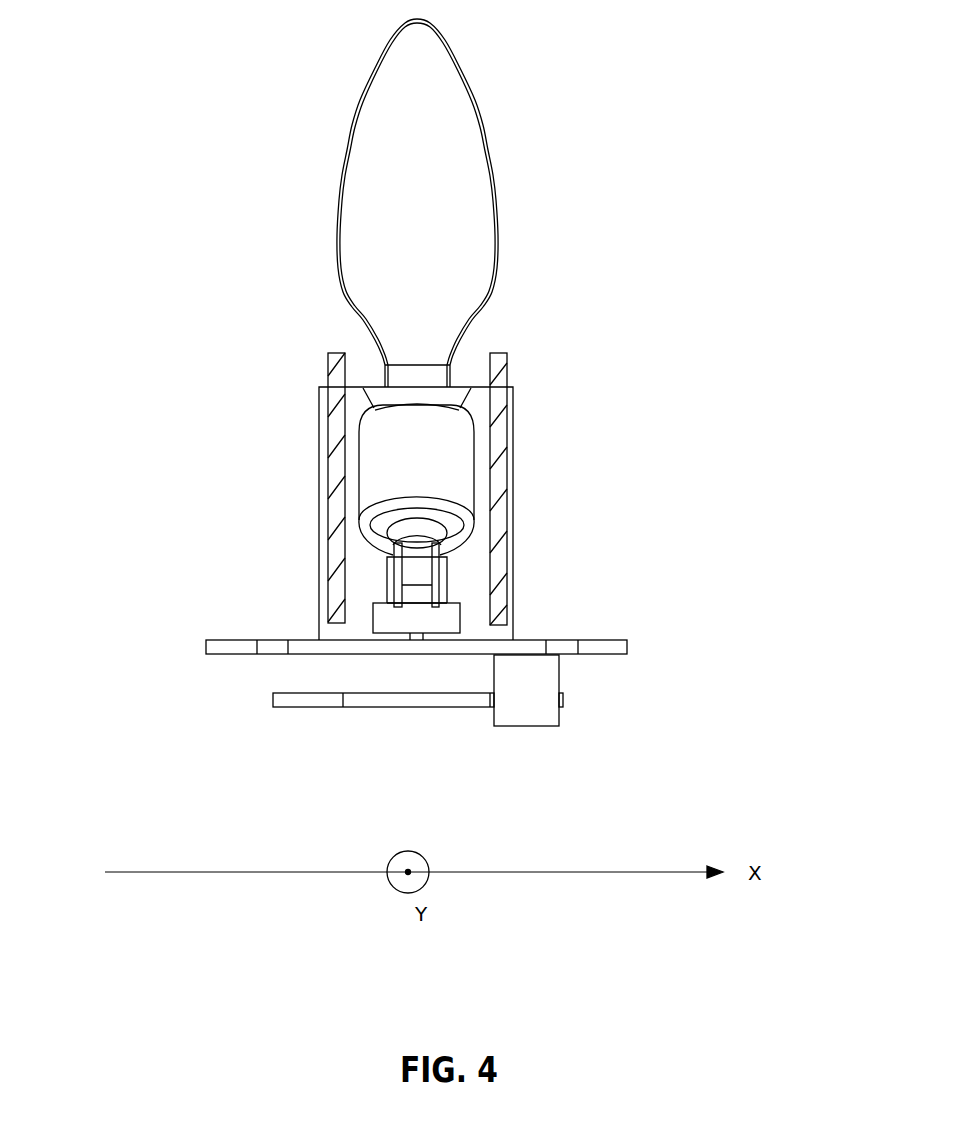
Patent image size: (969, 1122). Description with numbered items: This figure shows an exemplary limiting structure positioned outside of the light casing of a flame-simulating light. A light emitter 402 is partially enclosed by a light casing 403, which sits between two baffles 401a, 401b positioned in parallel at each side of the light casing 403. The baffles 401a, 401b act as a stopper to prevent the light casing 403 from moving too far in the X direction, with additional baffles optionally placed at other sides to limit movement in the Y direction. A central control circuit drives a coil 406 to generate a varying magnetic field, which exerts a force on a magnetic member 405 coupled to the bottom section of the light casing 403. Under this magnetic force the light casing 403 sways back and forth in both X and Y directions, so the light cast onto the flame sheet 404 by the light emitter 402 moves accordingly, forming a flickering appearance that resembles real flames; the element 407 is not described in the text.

The baffle 401a is at (335, 466).
The baffle 401b is at (503, 473).
The light emitter 402 is at (428, 549).
The light casing 403 is at (463, 452).
The flame sheet 404 is at (440, 245).
The magnetic member 405 is at (447, 620).
The coil 406 is at (532, 677).
The circuit board 407 is at (410, 645).